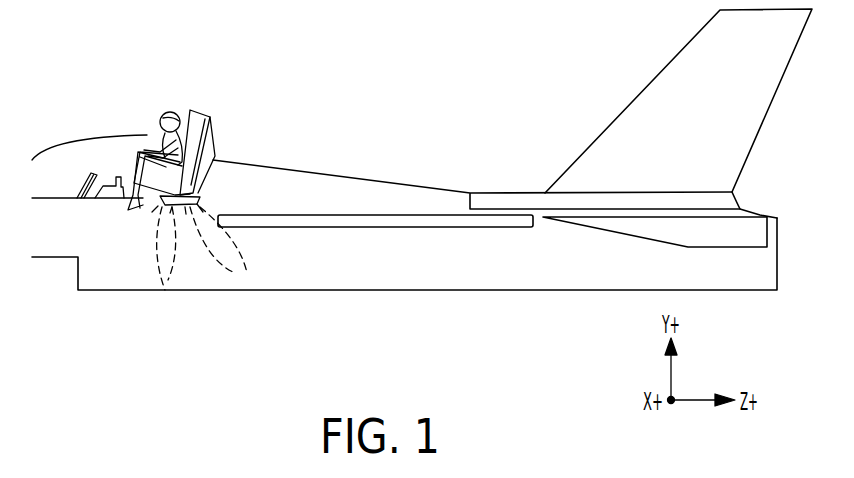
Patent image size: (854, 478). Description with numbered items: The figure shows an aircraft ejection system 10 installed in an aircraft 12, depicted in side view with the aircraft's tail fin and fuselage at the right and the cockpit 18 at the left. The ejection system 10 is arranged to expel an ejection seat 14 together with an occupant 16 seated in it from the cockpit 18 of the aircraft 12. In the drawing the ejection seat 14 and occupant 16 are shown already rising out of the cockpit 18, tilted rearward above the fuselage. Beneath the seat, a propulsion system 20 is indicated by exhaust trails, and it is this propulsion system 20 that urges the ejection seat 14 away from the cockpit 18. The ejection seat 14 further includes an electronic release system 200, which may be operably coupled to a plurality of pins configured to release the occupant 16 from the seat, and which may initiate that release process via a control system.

The aircraft ejection system 10 is at (334, 83).
The aircraft 12 is at (438, 266).
The ejection seat 14 is at (212, 120).
The occupant 16 is at (157, 113).
The cockpit 18 is at (66, 183).
The propulsion system 20 is at (162, 245).
The electronic release system 200 is at (212, 140).